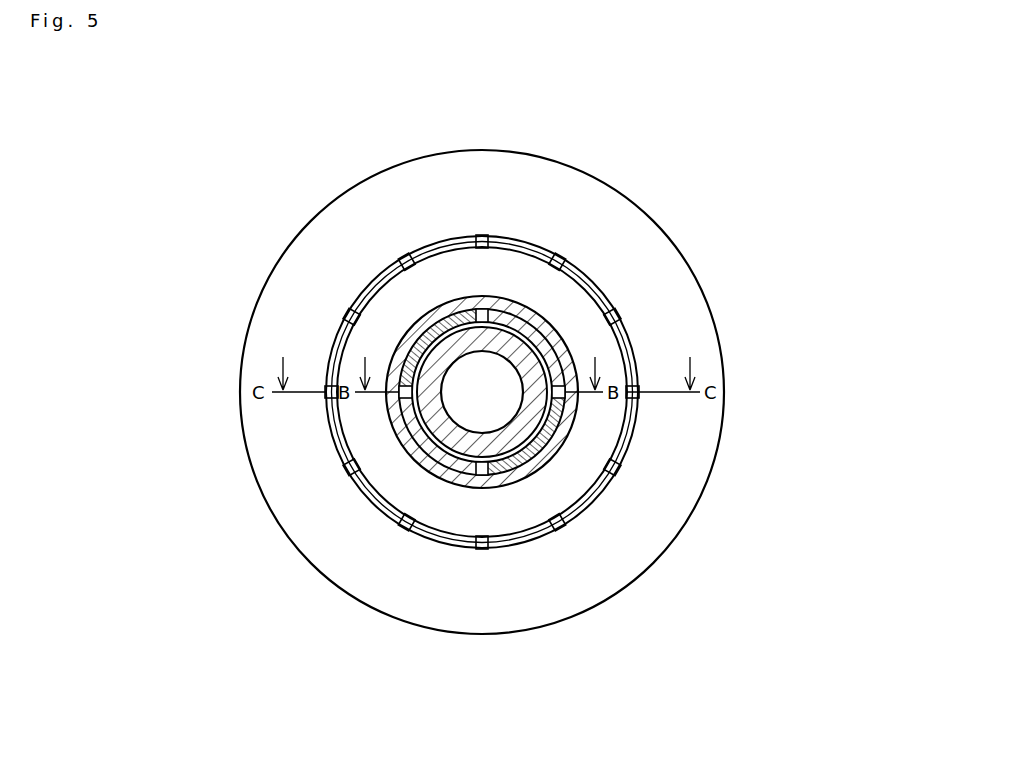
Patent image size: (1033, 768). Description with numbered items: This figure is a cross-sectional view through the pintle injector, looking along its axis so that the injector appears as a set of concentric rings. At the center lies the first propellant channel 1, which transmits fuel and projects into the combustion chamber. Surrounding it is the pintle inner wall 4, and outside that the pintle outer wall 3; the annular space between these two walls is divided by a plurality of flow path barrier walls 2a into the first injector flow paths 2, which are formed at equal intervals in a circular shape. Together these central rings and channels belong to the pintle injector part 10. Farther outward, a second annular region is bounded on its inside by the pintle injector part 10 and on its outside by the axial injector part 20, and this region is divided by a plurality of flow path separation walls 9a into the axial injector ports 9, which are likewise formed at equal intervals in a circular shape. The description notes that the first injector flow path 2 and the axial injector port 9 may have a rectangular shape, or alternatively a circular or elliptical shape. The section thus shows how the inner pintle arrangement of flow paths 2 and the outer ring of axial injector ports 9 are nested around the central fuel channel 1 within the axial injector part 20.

The first propellant channel 1 is at (477, 407).
The first injector flow paths 2 is at (402, 453).
The flow path barrier walls 2a is at (563, 432).
The pintle outer wall 3 is at (560, 433).
The pintle inner wall 4 is at (505, 437).
The axial injector ports 9 is at (562, 258).
The flow path separation walls 9a is at (517, 242).
The pintle injector part 10 is at (458, 278).
The axial injector part 20 is at (653, 287).